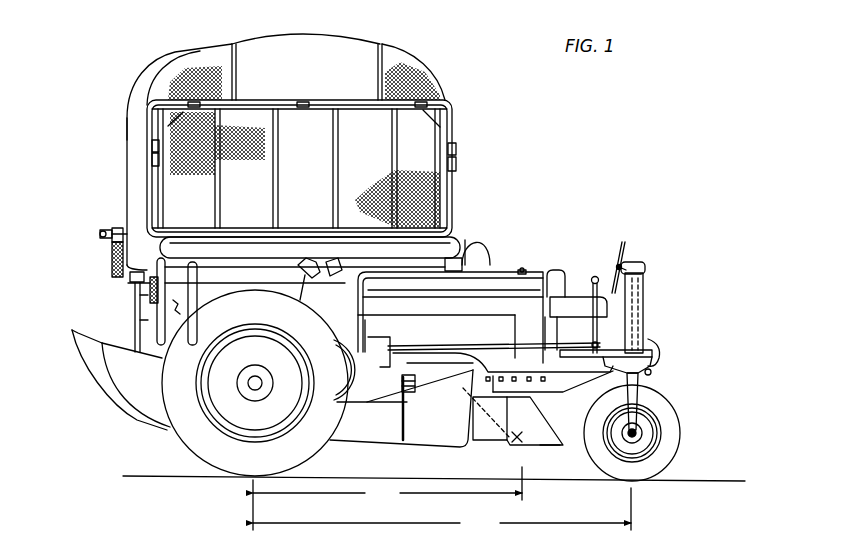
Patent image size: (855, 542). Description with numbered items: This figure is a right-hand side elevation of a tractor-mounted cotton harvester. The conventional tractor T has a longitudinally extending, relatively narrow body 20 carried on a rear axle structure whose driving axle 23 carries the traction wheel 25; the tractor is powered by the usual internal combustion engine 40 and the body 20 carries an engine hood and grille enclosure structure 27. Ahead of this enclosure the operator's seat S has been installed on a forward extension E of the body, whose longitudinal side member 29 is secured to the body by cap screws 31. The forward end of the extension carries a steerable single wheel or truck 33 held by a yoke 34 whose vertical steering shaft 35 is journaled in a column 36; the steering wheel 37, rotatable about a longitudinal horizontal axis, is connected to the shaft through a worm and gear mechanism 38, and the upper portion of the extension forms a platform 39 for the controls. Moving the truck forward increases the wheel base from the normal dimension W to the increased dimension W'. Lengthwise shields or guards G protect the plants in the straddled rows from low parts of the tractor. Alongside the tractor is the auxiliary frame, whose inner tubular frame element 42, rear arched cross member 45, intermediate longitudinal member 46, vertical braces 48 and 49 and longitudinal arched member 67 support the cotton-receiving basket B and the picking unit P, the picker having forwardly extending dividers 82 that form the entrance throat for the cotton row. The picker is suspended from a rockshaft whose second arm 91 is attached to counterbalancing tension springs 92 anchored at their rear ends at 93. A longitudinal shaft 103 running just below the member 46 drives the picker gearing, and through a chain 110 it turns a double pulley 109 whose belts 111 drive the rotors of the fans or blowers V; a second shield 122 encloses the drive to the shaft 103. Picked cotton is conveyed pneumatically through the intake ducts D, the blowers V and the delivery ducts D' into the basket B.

The basket B is at (318, 36).
The delivery ducts D' is at (108, 130).
The intake ducts D is at (471, 237).
The forward extension E is at (598, 378).
The shields or guards G is at (133, 398).
The cotton-picking unit P is at (543, 447).
The operator's seat S is at (574, 280).
The tractor T is at (503, 268).
The fans or blowers V is at (130, 227).
The normal wheel base W is at (387, 498).
The increased wheel base W' is at (442, 511).
The tractor body 20 is at (432, 360).
The driving axle 23 is at (254, 386).
The traction wheel 25 is at (198, 447).
The engine hood and grille enclosure structure 27 is at (527, 288).
The longitudinal side member 29 is at (562, 381).
The cap screws 31 is at (489, 383).
The steerable wheel or truck 33 is at (675, 437).
The yoke 34 is at (637, 393).
The vertical steering shaft 35 is at (640, 313).
The column or casing 36 is at (645, 289).
The steering wheel 37 is at (624, 242).
The worm and gear mechanism 38 is at (641, 267).
The platform 39 is at (651, 340).
The internal combustion engine 40 is at (458, 337).
The inner support or frame element 42 is at (132, 317).
The rear arched cross member 45 is at (157, 319).
The intermediate longitudinal member 46 is at (265, 266).
The vertical brace 48 is at (347, 277).
The vertical brace 49 is at (192, 279).
The longitudinal arched member 67 is at (348, 240).
The dividers 82 is at (498, 431).
The second arm 91 is at (326, 302).
The tension springs 92 is at (313, 272).
The spring anchors 93 is at (180, 304).
The longitudinal shaft 103 is at (173, 285).
The double pulley 109 is at (112, 270).
The chain 110 is at (137, 280).
The belts 111 is at (118, 230).
The second shield 122 is at (142, 308).